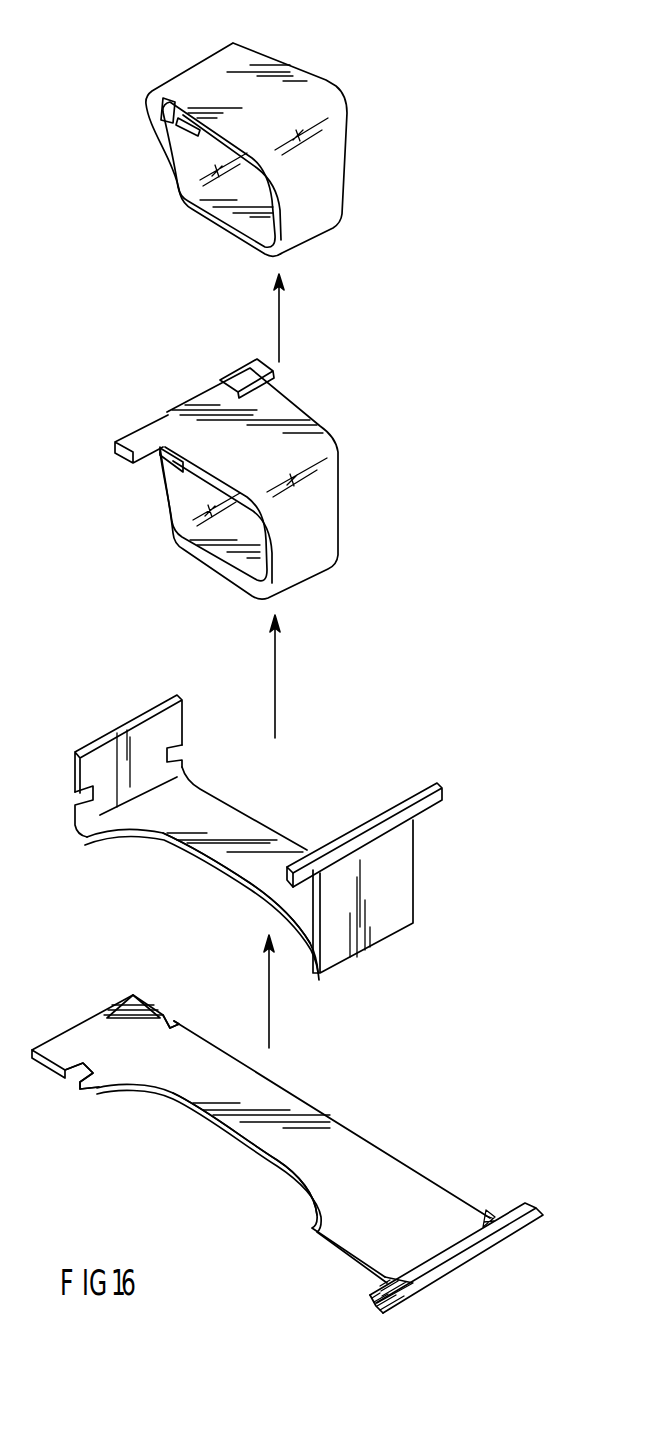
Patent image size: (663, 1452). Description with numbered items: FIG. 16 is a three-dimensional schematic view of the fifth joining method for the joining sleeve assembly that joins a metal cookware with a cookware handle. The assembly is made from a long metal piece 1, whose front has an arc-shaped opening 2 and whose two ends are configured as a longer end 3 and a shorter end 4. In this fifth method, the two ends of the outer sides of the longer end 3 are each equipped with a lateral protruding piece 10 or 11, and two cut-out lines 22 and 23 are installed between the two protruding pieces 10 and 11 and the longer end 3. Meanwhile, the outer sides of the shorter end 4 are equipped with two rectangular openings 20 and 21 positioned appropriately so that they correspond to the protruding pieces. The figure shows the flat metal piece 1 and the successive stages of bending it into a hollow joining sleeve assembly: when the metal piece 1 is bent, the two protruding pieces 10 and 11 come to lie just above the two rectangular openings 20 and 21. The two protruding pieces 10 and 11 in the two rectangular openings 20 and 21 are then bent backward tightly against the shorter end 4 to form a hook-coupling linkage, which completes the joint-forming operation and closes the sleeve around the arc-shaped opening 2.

The long metal piece 1 is at (338, 177).
The arc-shaped opening 2 is at (211, 890).
The longer end 3 is at (303, 81).
The shorter end 4 is at (180, 125).
The lateral protruding piece 10 is at (163, 100).
The lateral protruding piece 11 is at (250, 372).
The rectangular opening 20 is at (73, 803).
The rectangular opening 21 is at (170, 750).
The cut-out line 22 is at (180, 100).
The cut-out line 23 is at (252, 53).